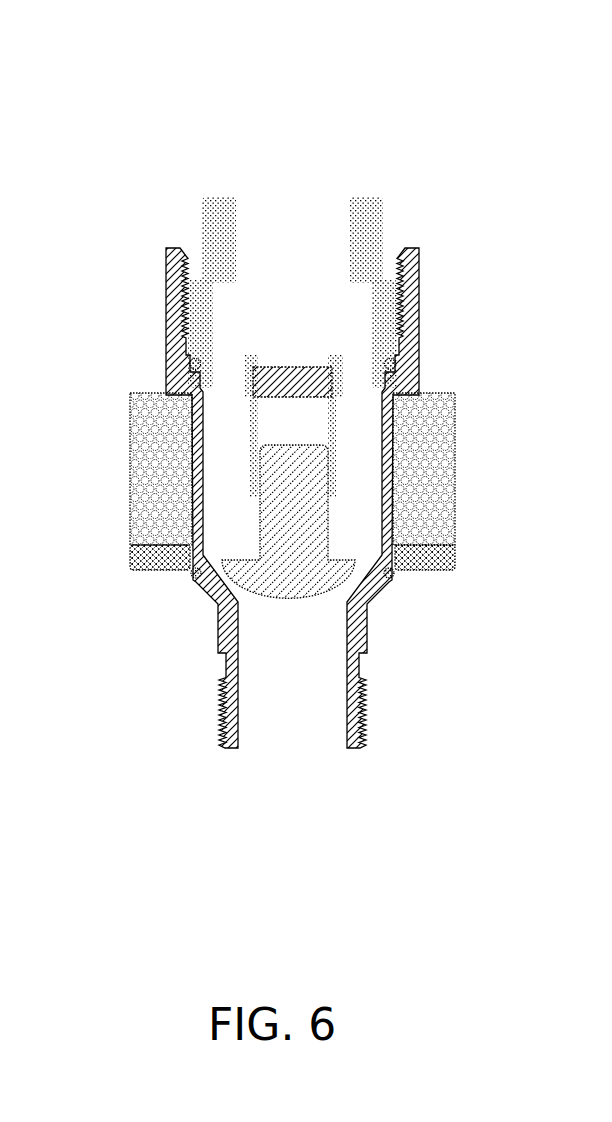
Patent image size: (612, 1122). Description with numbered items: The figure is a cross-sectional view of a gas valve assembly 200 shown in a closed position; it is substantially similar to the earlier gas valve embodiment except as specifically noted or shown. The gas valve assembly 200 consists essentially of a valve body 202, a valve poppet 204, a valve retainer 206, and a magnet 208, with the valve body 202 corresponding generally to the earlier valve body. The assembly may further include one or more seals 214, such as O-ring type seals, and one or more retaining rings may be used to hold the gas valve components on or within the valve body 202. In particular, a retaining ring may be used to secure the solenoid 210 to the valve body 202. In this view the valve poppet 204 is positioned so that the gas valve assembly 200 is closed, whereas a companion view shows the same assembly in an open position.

The gas valve assembly 200 is at (445, 118).
The valve body 202 is at (422, 315).
The valve poppet 204 is at (262, 595).
The valve retainer 206 is at (387, 225).
The magnet 208 is at (288, 368).
The solenoid 210 is at (452, 490).
The seal 214 is at (192, 368).